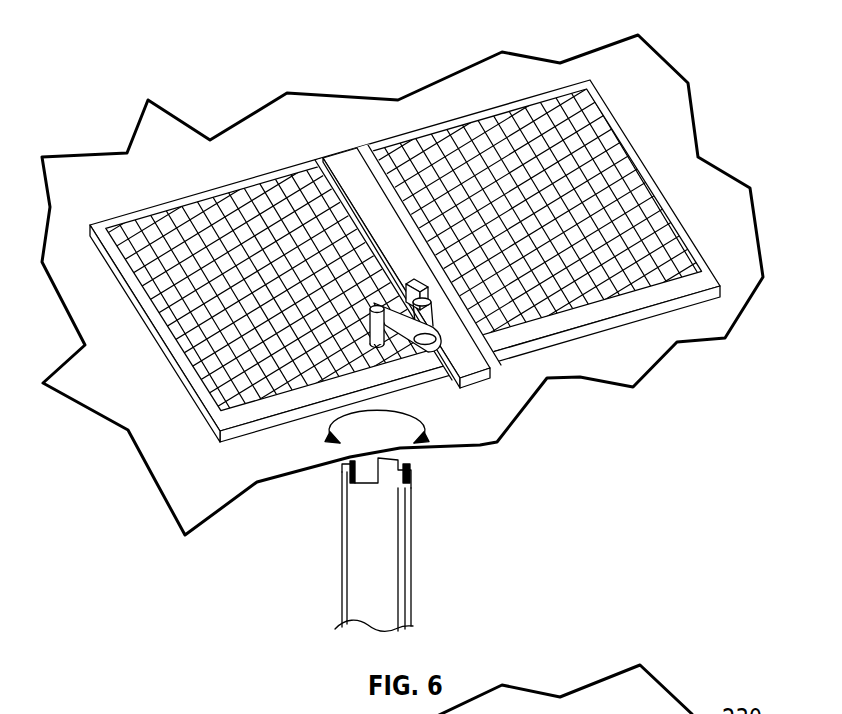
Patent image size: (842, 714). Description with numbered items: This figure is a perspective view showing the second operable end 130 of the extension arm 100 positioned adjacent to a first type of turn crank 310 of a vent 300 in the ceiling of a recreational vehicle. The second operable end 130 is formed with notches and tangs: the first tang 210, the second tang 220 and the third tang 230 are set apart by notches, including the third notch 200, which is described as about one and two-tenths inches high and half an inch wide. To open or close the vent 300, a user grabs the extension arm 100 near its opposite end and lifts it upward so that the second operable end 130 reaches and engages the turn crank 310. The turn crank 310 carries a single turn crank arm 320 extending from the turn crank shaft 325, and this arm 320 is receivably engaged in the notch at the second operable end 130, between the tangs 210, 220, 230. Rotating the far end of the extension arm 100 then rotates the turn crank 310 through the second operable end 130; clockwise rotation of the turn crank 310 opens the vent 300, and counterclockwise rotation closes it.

The extension arm 100 is at (449, 594).
The second operable end 130 is at (313, 529).
The third notch 200 is at (363, 493).
The first tang 210 is at (412, 473).
The second tang 220 is at (343, 478).
The third tang 230 is at (343, 460).
The vent 300 is at (670, 106).
The turn crank 310 is at (400, 263).
The single turn crank arm 320 is at (405, 337).
The turn crank shaft 325 is at (488, 352).